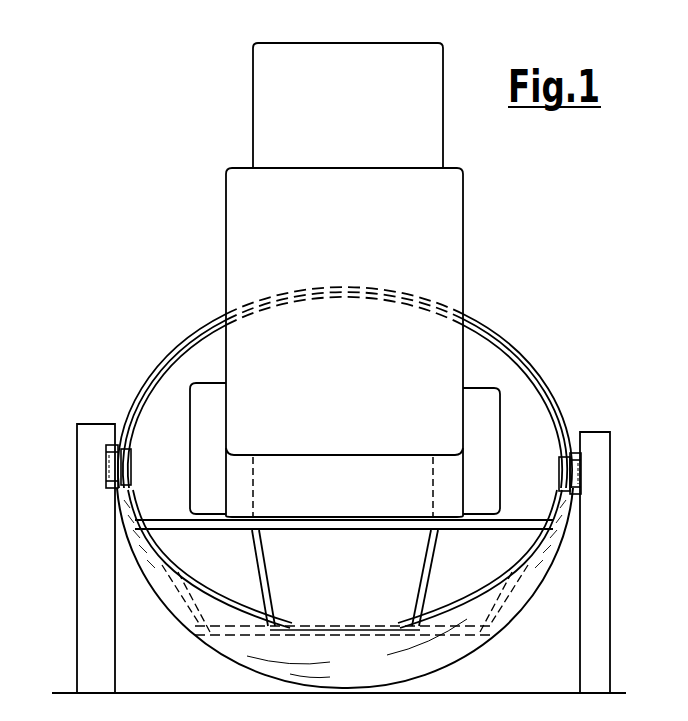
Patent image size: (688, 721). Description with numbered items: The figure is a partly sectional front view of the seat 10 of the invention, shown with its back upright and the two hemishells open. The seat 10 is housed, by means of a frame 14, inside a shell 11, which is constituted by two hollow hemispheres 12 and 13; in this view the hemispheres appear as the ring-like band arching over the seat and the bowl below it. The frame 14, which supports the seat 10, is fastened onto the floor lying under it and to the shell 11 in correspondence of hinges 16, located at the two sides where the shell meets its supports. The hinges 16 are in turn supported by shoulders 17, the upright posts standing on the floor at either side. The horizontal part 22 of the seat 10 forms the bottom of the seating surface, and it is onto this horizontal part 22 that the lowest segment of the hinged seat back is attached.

The seat 10 is at (467, 223).
The shell 11 is at (228, 658).
The hollow hemisphere 12 is at (192, 333).
The hollow hemisphere 13 is at (179, 361).
The frame 14 is at (548, 515).
The hinges 16 is at (113, 445).
The shoulders 17 is at (83, 590).
The horizontal part 22 is at (366, 468).